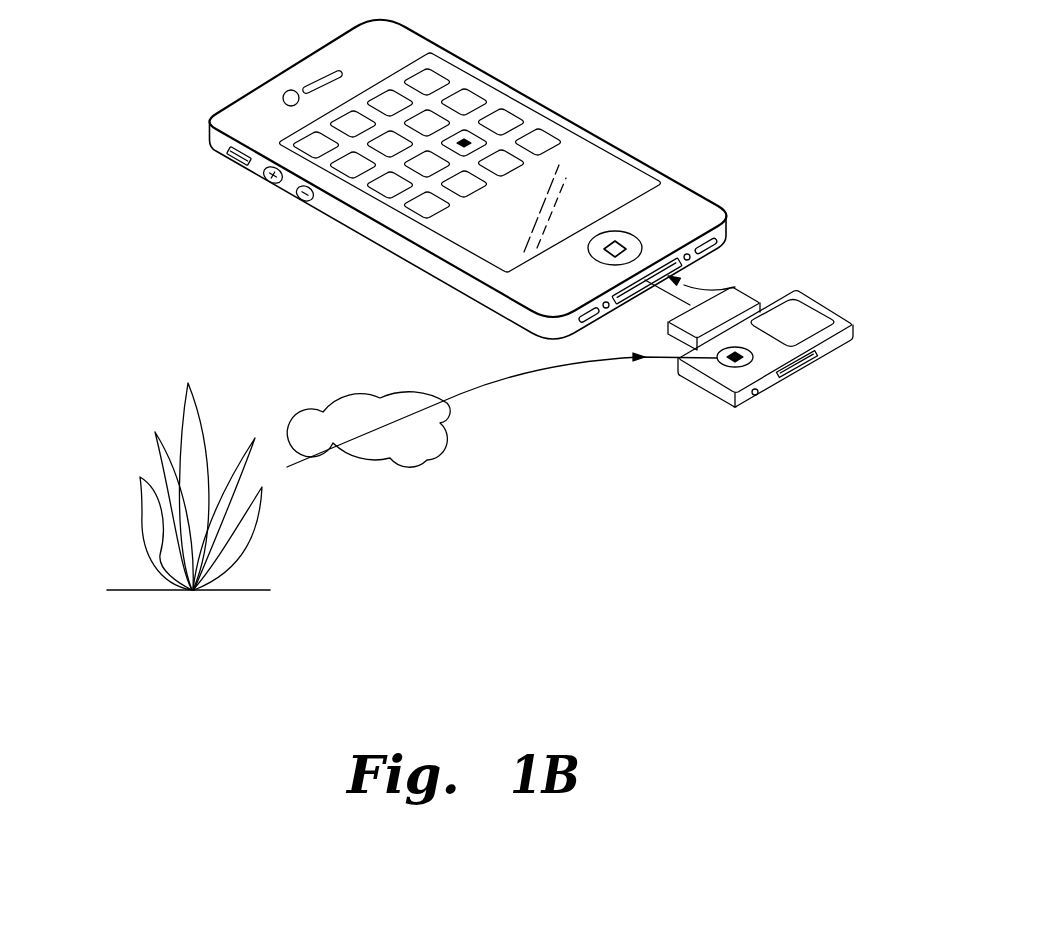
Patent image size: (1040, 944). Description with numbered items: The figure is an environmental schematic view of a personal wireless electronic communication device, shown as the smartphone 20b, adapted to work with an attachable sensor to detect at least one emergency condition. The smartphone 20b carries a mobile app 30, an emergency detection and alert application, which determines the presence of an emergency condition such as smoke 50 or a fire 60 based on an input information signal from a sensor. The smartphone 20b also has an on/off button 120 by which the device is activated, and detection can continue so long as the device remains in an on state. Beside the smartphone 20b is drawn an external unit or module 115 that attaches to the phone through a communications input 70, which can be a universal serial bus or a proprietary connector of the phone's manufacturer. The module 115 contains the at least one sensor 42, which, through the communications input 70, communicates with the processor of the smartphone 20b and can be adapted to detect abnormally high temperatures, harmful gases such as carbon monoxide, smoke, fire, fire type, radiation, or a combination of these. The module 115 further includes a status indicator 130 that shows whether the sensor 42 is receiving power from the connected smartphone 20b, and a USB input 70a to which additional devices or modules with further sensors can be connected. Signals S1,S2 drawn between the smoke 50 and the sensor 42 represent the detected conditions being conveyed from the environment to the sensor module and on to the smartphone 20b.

The smartphone 20b is at (513, 179).
The mobile app 30 is at (466, 126).
The on/off button 120 is at (612, 226).
The external unit or module 115 is at (830, 374).
The communications input 70 is at (805, 374).
The USB input 70a is at (805, 372).
The status indicator 130 is at (797, 330).
The sensor 42 is at (720, 368).
The smoke 50 is at (326, 376).
The fire 60 is at (296, 539).
The sensor signals S1,S2 is at (520, 373).